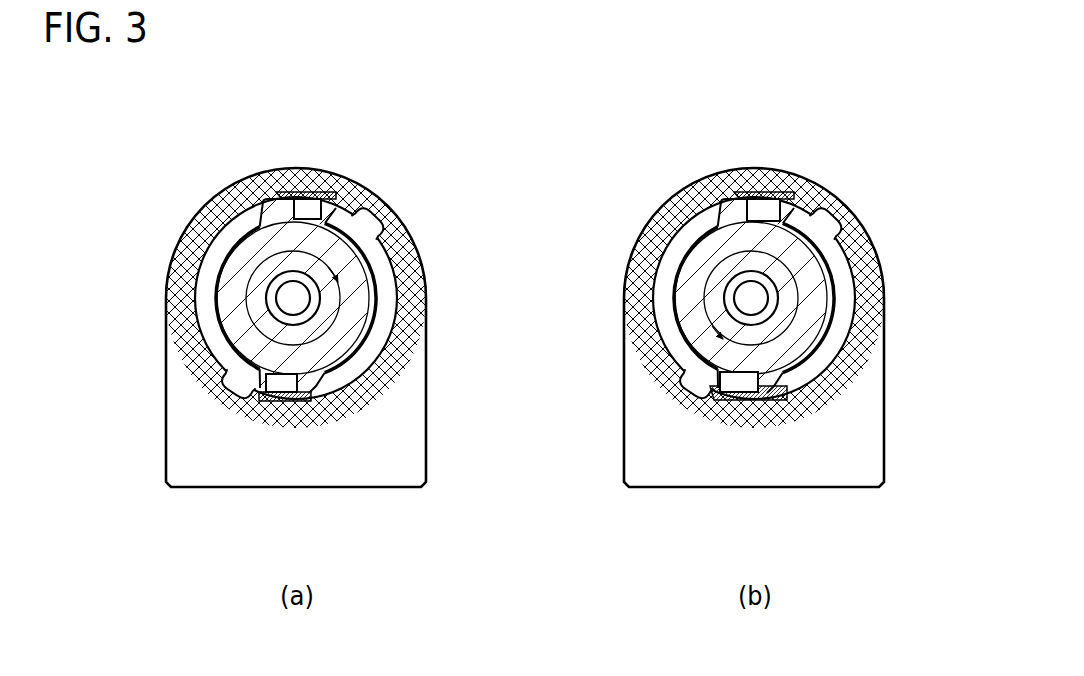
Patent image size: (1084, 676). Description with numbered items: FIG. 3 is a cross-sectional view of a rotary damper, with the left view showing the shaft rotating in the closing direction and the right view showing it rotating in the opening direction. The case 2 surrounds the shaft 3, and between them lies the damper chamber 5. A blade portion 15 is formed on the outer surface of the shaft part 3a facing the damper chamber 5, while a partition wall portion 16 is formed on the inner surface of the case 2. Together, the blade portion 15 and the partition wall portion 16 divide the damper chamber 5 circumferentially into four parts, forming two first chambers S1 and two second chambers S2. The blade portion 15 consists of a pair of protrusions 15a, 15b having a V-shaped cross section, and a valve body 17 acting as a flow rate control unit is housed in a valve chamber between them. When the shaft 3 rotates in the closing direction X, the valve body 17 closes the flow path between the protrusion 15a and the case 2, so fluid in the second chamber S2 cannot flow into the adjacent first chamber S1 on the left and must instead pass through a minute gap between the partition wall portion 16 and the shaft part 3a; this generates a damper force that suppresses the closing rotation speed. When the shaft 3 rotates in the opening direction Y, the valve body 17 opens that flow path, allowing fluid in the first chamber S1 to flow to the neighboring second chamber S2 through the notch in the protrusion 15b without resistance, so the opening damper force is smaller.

The case 2 is at (358, 172).
The shaft 3 is at (226, 252).
The shaft part 3a is at (217, 264).
The damper chamber 5 is at (212, 192).
The blade portion 15 is at (353, 92).
The protrusion 15a is at (289, 196).
The protrusion 15b is at (321, 196).
The partition wall portion 16 is at (390, 236).
The valve body 17 is at (303, 200).
The first chamber S1 is at (246, 222).
The second chamber S2 is at (362, 200).
The closing direction X is at (287, 347).
The opening direction Y is at (789, 266).